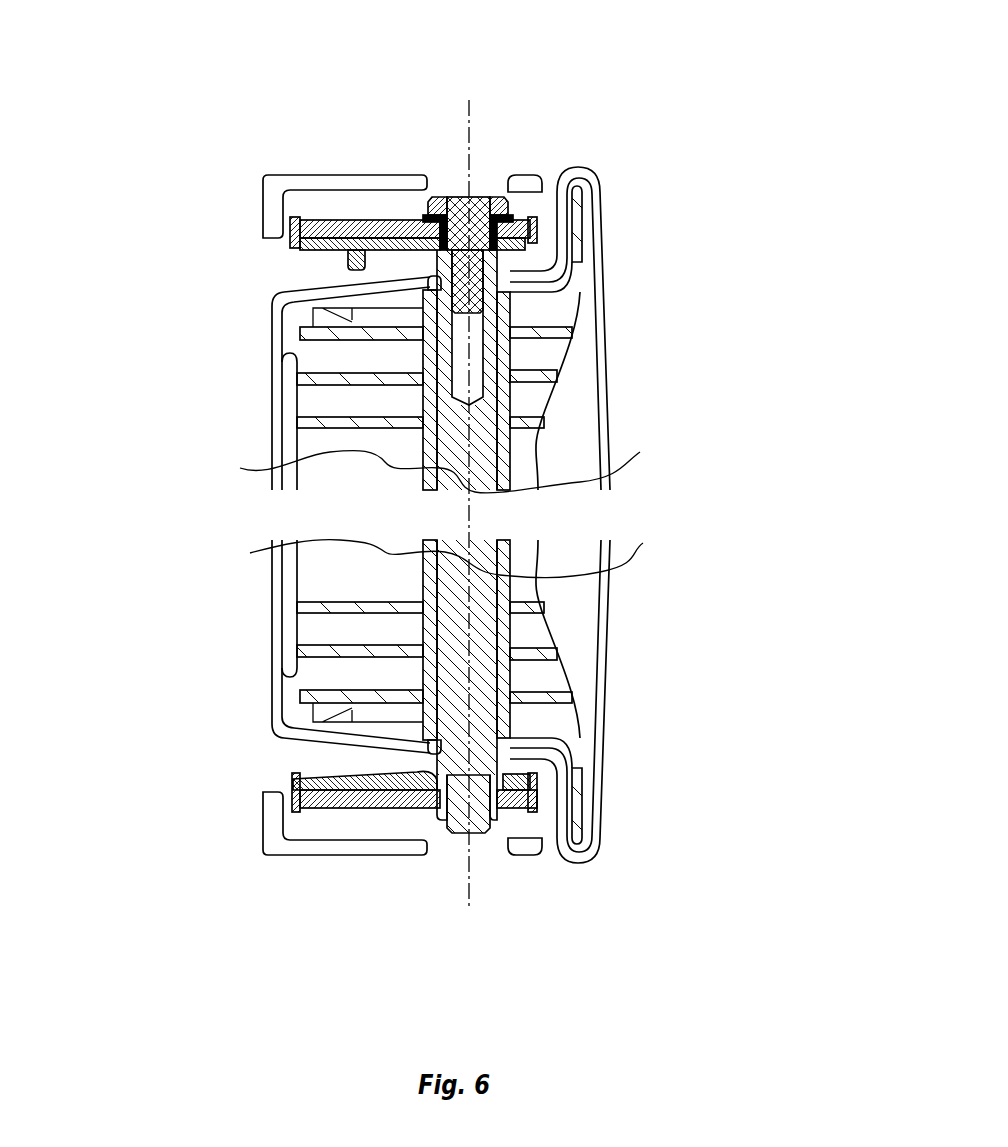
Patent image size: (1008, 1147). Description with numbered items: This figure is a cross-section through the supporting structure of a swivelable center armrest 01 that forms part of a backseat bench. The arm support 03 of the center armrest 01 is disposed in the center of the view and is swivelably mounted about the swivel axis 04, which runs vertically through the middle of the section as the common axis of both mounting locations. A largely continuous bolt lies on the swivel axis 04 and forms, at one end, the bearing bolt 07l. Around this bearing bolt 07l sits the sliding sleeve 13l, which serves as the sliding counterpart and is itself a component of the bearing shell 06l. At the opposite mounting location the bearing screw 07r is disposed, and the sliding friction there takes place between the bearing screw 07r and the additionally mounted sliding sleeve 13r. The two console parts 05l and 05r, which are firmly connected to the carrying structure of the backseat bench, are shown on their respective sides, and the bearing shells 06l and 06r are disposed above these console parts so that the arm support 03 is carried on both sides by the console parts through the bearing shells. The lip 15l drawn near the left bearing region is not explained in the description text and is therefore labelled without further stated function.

The center armrest 01 is at (150, 351).
The arm support 03 is at (567, 437).
The swivel axis 04 is at (475, 127).
The right console part 05r is at (330, 220).
The right bearing shell 06r is at (350, 257).
The bearing screw 07r is at (447, 197).
The sliding sleeve 13r is at (470, 175).
The left console part 05l is at (317, 813).
The left bearing shell 06l is at (427, 777).
The bearing bolt 07l is at (455, 815).
The sliding sleeve 13l is at (497, 817).
The left hub flange lip 15l is at (428, 768).